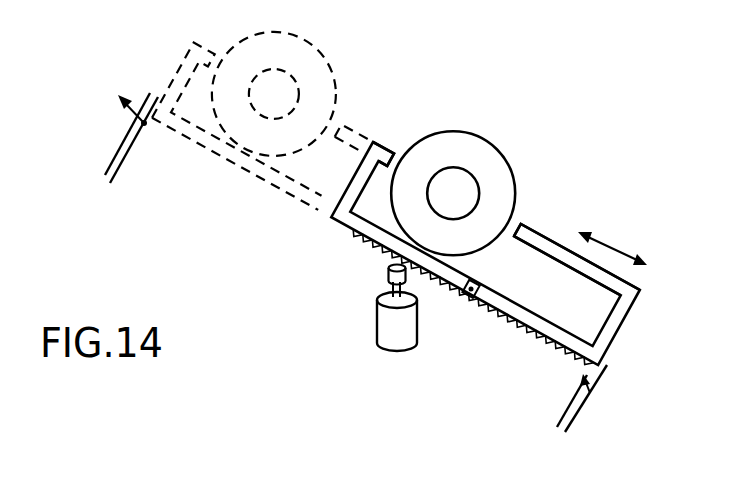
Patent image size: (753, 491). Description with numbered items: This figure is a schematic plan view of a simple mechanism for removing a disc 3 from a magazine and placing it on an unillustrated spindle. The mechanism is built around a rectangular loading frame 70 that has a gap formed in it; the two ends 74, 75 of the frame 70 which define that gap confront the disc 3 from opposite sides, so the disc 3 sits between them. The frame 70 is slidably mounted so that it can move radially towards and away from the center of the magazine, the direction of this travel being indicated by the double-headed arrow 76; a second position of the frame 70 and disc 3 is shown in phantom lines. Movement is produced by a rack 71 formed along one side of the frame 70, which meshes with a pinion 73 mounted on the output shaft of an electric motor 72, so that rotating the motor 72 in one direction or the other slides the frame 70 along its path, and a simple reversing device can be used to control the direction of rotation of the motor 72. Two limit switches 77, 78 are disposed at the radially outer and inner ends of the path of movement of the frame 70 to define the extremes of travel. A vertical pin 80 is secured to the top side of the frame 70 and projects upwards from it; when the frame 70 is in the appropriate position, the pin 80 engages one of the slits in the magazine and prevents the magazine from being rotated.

The disc 3 is at (502, 172).
The loading frame 70 is at (628, 320).
The rack 71 is at (505, 320).
The electric motor 72 is at (397, 351).
The pinion 73 is at (380, 275).
The end of the frame 74 is at (394, 152).
The end of the frame 75 is at (528, 225).
The arrow 76 is at (622, 247).
The limit switch 77 is at (583, 402).
The limit switch 78 is at (110, 162).
The vertical pin 80 is at (468, 296).